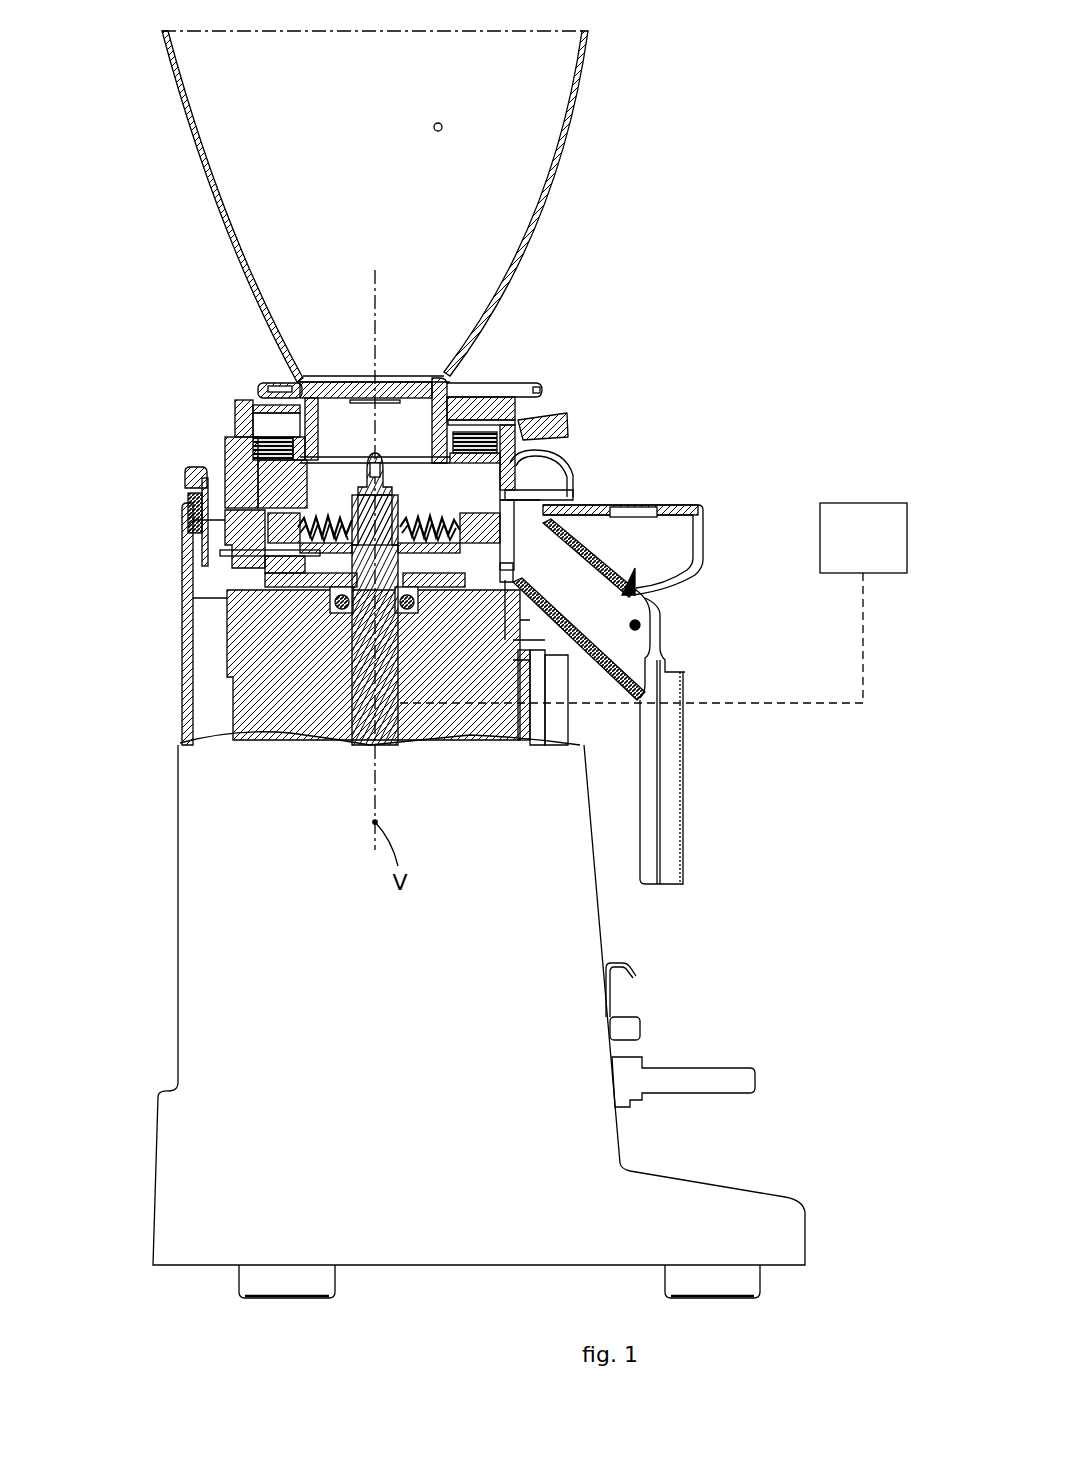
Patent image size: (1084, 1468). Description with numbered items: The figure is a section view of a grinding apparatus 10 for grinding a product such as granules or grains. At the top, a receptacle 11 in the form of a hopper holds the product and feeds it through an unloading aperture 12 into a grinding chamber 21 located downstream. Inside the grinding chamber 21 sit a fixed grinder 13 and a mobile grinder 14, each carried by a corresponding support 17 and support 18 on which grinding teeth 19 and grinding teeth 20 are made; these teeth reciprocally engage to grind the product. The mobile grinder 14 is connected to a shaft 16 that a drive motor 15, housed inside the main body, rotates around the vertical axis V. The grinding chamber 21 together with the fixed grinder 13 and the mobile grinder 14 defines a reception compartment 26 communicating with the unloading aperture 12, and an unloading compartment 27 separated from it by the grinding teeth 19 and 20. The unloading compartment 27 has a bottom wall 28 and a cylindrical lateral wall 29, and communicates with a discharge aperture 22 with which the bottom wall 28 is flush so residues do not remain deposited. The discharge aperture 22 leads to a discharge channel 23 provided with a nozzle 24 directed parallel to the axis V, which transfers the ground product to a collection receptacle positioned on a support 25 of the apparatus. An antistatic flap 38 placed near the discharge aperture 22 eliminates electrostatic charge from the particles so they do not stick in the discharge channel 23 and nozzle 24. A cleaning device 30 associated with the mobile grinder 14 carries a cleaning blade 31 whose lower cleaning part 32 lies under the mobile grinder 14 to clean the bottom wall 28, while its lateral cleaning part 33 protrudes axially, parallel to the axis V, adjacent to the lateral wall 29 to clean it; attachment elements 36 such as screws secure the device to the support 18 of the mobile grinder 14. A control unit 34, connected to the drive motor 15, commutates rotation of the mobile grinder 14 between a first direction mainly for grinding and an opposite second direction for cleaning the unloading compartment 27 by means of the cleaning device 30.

The grinding apparatus 10 is at (148, 244).
The receptacle 11 is at (509, 203).
The unloading aperture 12 is at (432, 420).
The fixed grinder 13 is at (277, 440).
The mobile grinder 14 is at (335, 563).
The drive motor 15 is at (483, 718).
The shaft 16 is at (363, 708).
The support of the fixed grinder 17 is at (270, 397).
The support of the mobile grinder 18 is at (444, 575).
The grinding teeth of the fixed grinder 19 is at (490, 427).
The grinding teeth of the mobile grinder 20 is at (438, 560).
The grinding chamber 21 is at (337, 495).
The discharge aperture 22 is at (490, 572).
The discharge channel 23 is at (607, 572).
The nozzle 24 is at (664, 834).
The support 25 is at (705, 1082).
The reception compartment 26 is at (275, 383).
The unloading compartment 27 is at (515, 480).
The bottom wall 28 is at (228, 657).
The lateral wall 29 is at (195, 521).
The cleaning device 30 is at (518, 657).
The cleaning blade 31 is at (258, 572).
The lower cleaning part 32 is at (322, 585).
The lateral cleaning part 33 is at (222, 553).
The control unit 34 is at (652, 603).
The attachment elements 36 is at (263, 590).
The antistatic flap 38 is at (500, 542).